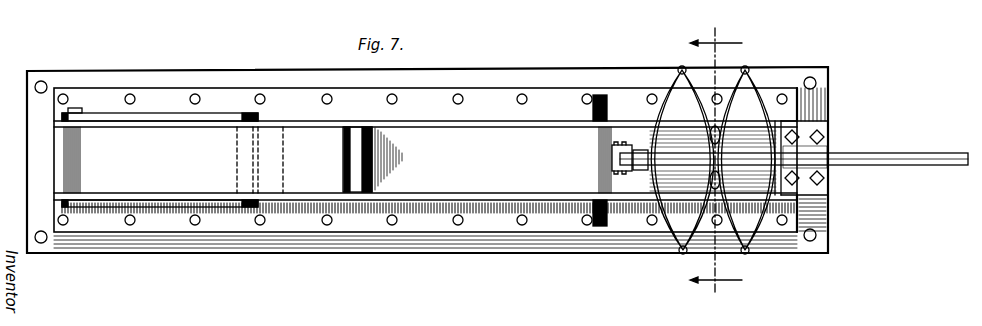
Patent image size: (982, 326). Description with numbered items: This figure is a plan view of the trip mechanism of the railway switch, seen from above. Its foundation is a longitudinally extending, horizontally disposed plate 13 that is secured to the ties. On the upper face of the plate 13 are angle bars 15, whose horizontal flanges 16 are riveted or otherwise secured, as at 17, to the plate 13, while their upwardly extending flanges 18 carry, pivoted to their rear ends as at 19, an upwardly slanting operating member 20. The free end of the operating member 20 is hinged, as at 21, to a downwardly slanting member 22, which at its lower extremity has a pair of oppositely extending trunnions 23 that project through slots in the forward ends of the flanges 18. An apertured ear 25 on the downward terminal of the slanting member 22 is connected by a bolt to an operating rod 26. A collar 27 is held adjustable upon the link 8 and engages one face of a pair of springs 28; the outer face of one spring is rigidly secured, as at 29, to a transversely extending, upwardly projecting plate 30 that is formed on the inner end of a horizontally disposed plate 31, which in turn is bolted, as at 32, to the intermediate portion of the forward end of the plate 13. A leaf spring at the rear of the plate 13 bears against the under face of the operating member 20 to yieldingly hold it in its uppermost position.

The plate 13 is at (343, 253).
The angle bars 15 is at (483, 118).
The horizontal flanges 16 is at (290, 104).
The rivets 17 is at (133, 94).
The vertical flanges 18 is at (798, 123).
The pivot 19 is at (82, 110).
The operating member 20 is at (188, 160).
The hinge 21 is at (365, 127).
The downwardly slanting member 22 is at (445, 160).
The trunnions 23 is at (600, 95).
The apertured ear 25 is at (612, 160).
The operating rod 26 is at (866, 157).
The collar 27 is at (638, 148).
The springs 28 is at (700, 82).
The bolt 29 is at (778, 126).
The upwardly projecting plate 30 is at (826, 172).
The horizontally disposed plate 31 is at (816, 150).
The bolt 32 is at (786, 183).
The link 8 is at (716, 161).